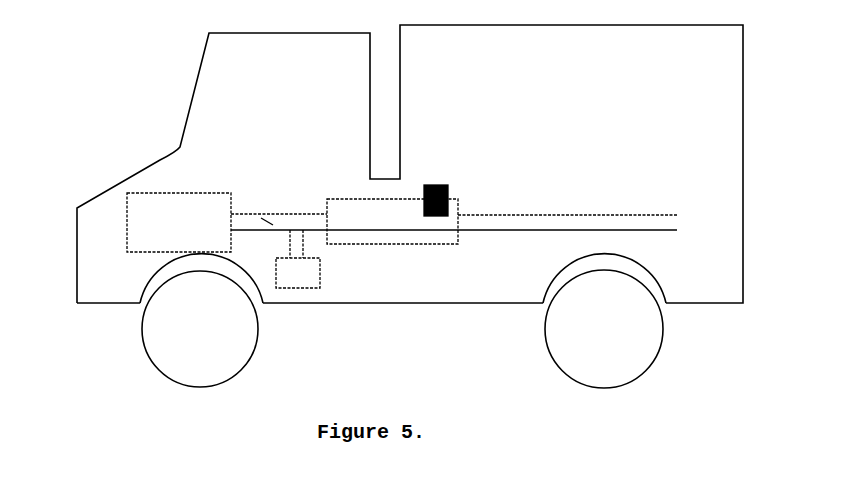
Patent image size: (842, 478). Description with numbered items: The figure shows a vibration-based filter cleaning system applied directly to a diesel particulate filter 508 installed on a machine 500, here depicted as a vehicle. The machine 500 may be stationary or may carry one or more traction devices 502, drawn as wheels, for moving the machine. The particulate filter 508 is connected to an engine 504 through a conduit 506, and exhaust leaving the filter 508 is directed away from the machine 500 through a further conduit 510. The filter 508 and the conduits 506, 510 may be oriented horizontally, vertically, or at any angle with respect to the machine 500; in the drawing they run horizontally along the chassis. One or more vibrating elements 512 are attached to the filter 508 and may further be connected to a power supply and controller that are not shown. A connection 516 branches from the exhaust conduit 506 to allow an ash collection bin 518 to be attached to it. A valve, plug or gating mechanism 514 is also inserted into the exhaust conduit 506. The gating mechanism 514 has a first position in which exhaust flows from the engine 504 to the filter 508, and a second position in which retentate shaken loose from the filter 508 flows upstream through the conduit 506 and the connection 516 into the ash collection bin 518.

The machine 500 is at (180, 68).
The traction device 502 is at (128, 354).
The engine 504 is at (202, 185).
The conduit 506 is at (246, 207).
The diesel particulate filter 508 is at (400, 193).
The conduit 510 is at (481, 207).
The vibrating element 512 is at (460, 185).
The gating mechanism 514 is at (277, 210).
The connection 516 is at (313, 247).
The ash collection bin 518 is at (327, 277).